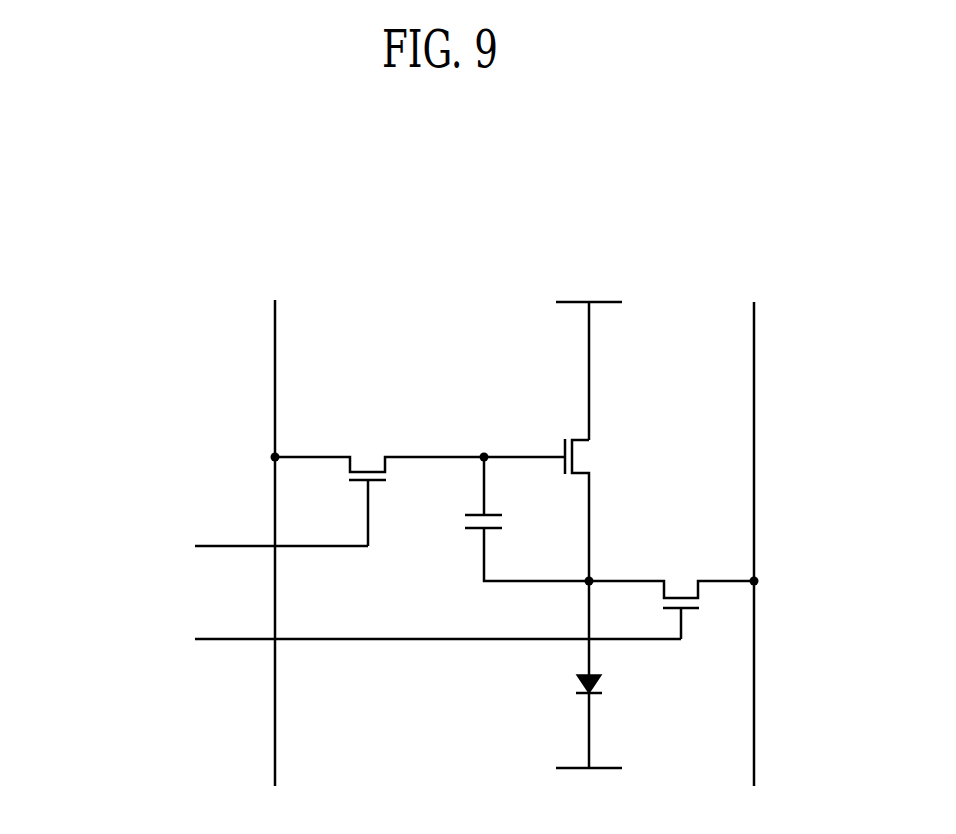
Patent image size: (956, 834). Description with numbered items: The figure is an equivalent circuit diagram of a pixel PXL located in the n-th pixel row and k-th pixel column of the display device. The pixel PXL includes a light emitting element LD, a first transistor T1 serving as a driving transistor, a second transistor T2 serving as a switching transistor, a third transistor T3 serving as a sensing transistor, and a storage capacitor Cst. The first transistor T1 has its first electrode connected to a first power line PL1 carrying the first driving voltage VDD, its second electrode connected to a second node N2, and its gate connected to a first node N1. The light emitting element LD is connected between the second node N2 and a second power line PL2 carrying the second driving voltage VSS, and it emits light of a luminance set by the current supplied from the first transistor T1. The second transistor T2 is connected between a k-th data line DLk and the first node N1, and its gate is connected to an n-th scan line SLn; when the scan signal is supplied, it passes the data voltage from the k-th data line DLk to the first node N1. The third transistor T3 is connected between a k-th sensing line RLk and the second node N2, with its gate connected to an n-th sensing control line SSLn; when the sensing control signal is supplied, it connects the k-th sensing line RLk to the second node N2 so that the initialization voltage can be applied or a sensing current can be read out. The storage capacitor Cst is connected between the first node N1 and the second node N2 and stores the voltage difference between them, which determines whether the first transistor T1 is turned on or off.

The pixel PXL is at (617, 196).
The k-th data line DLk is at (275, 513).
The k-th sensing line RLk is at (754, 513).
The first driving voltage VDD is at (589, 286).
The second driving voltage VSS is at (589, 785).
The first power line PL1 is at (589, 370).
The second power line PL2 is at (589, 730).
The first transistor T1 is at (545, 510).
The second transistor T2 is at (378, 488).
The third transistor T3 is at (671, 599).
The first node N1 is at (484, 441).
The second node N2 is at (604, 569).
The storage capacitor Cst is at (527, 519).
The light emitting element LD is at (604, 641).
The n-th scan line SLn is at (240, 552).
The n-th sensing control line SSLn is at (397, 647).